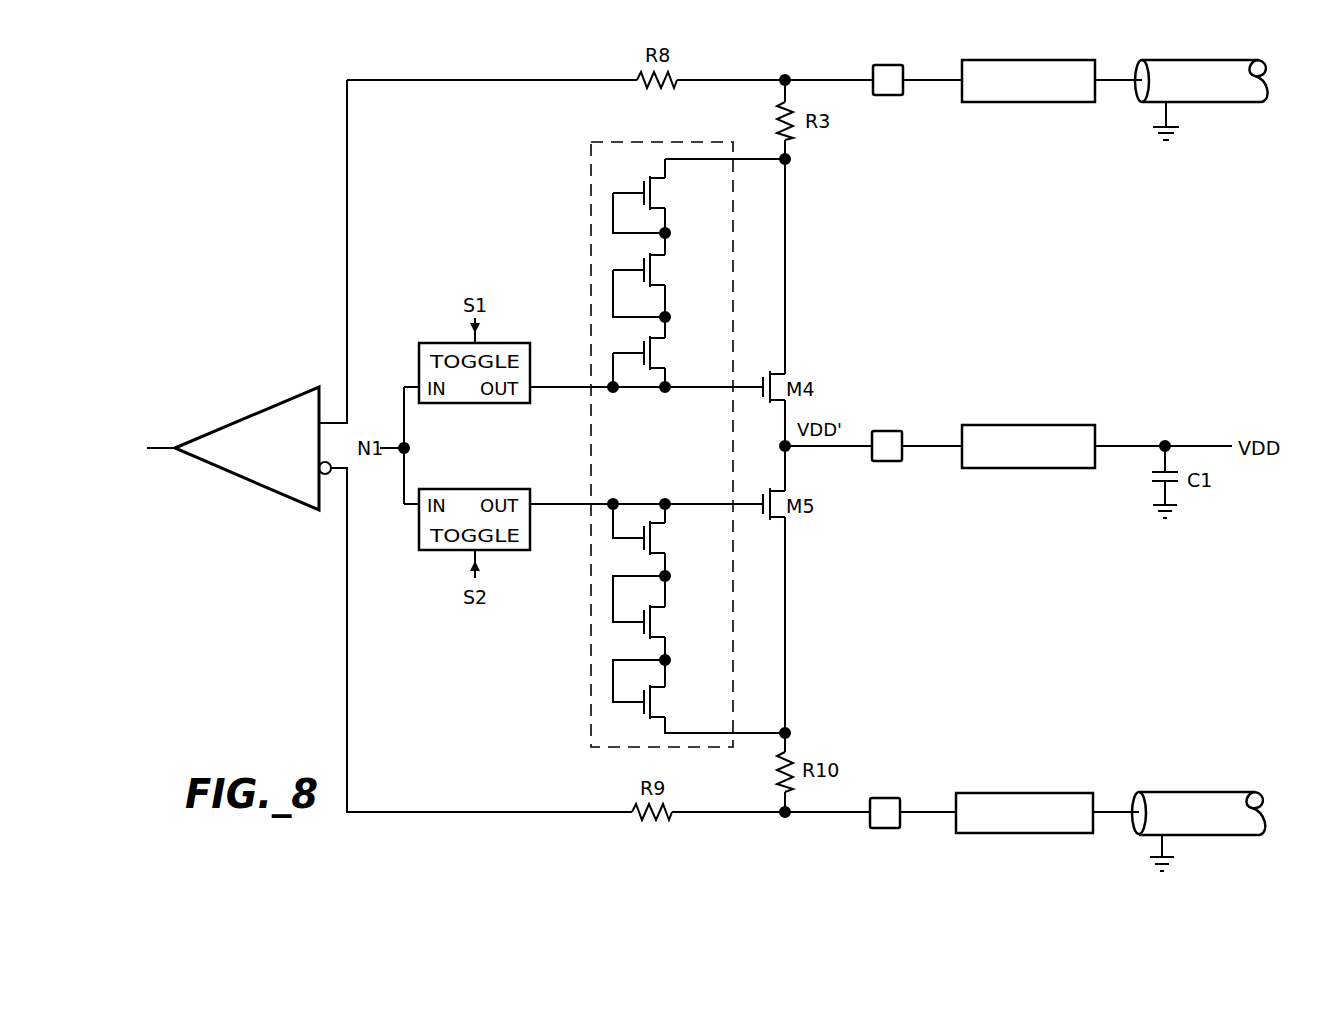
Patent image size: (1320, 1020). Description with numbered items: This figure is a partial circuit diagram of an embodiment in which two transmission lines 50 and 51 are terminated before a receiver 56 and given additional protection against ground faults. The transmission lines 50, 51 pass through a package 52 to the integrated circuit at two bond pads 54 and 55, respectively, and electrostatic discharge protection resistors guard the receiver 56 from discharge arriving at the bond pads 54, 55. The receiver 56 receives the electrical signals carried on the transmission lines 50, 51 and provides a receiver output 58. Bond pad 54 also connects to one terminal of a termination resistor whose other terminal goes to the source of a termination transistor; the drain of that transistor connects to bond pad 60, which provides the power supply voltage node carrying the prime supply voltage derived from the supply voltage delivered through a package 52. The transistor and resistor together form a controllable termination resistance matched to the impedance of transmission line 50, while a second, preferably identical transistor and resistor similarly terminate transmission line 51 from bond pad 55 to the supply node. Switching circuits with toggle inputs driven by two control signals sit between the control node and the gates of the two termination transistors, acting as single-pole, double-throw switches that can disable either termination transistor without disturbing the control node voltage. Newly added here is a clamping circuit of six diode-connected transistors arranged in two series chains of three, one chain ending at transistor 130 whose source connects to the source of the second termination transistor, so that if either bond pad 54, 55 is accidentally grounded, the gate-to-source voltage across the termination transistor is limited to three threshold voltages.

The transmission line 50 is at (1186, 54).
The transmission line 51 is at (1181, 784).
The package 52 is at (1017, 60).
The bond pad 54 is at (887, 65).
The bond pad 55 is at (885, 798).
The receiver 56 is at (284, 497).
The receiver output 58 is at (157, 451).
The bond pad 60 is at (887, 431).
The transistor 130 is at (591, 186).